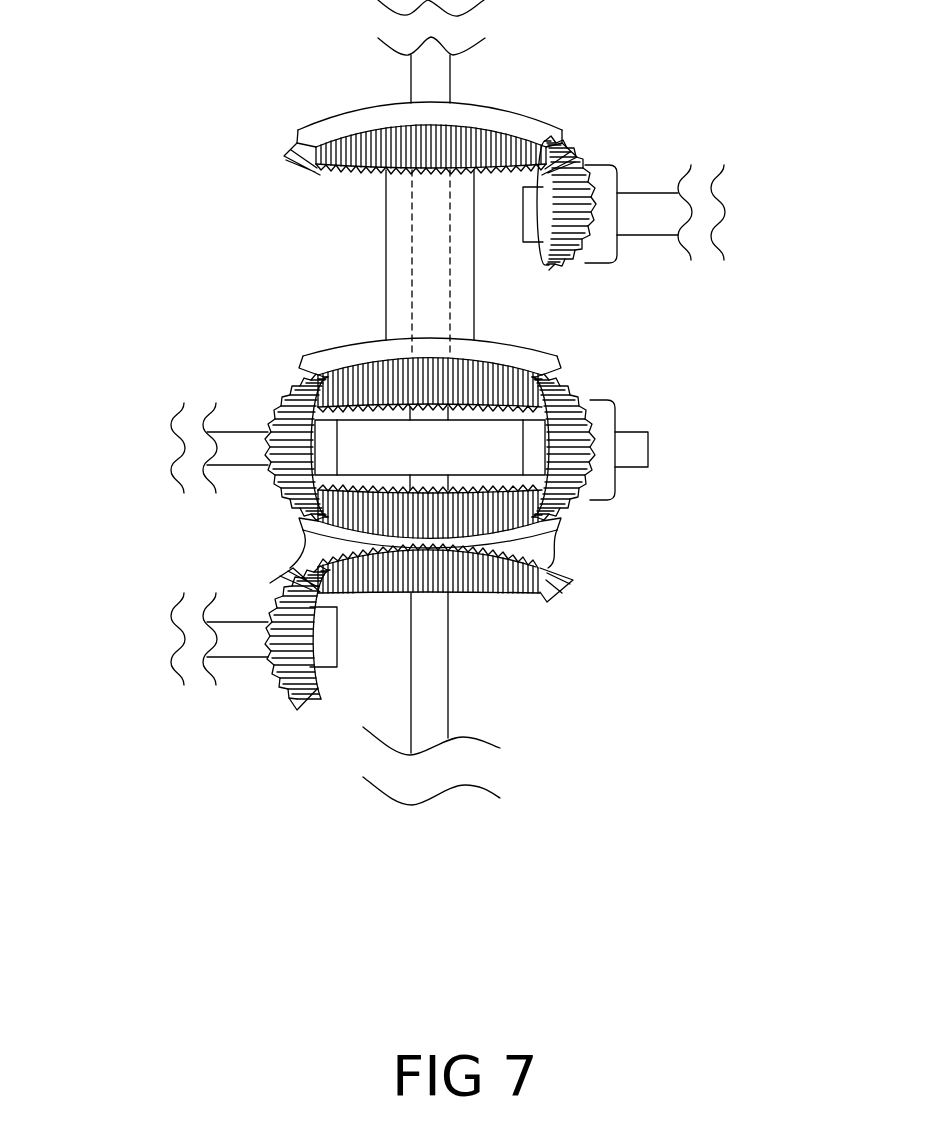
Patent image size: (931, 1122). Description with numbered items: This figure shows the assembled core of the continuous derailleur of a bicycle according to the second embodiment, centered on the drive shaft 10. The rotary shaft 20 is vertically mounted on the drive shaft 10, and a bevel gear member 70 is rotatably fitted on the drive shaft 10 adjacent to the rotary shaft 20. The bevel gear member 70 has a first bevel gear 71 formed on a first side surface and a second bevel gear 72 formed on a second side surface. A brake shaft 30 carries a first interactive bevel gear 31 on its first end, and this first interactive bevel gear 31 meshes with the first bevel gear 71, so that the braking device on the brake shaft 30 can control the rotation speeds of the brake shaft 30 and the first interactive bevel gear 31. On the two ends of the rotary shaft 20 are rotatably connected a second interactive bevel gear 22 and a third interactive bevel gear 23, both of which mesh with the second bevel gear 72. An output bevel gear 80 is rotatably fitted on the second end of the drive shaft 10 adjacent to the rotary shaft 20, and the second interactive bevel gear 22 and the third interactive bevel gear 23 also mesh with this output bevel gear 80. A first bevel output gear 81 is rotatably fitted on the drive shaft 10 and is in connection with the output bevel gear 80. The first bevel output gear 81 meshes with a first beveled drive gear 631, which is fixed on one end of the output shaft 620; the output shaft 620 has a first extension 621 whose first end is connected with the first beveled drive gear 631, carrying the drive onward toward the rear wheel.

The drive shaft 10 is at (435, 83).
The rotary shaft 20 is at (407, 447).
The second interactive bevel gear 22 is at (580, 500).
The third interactive bevel gear 23 is at (273, 423).
The brake shaft 30 is at (233, 640).
The first interactive bevel gear 31 is at (290, 703).
The bevel gear member 70 is at (378, 603).
The first bevel gear 71 is at (490, 595).
The second bevel gear 72 is at (305, 549).
The output bevel gear 80 is at (507, 373).
The first bevel output gear 81 is at (342, 147).
The output shaft 620 is at (720, 267).
The first extension 621 is at (648, 223).
The first beveled drive gear 631 is at (572, 157).